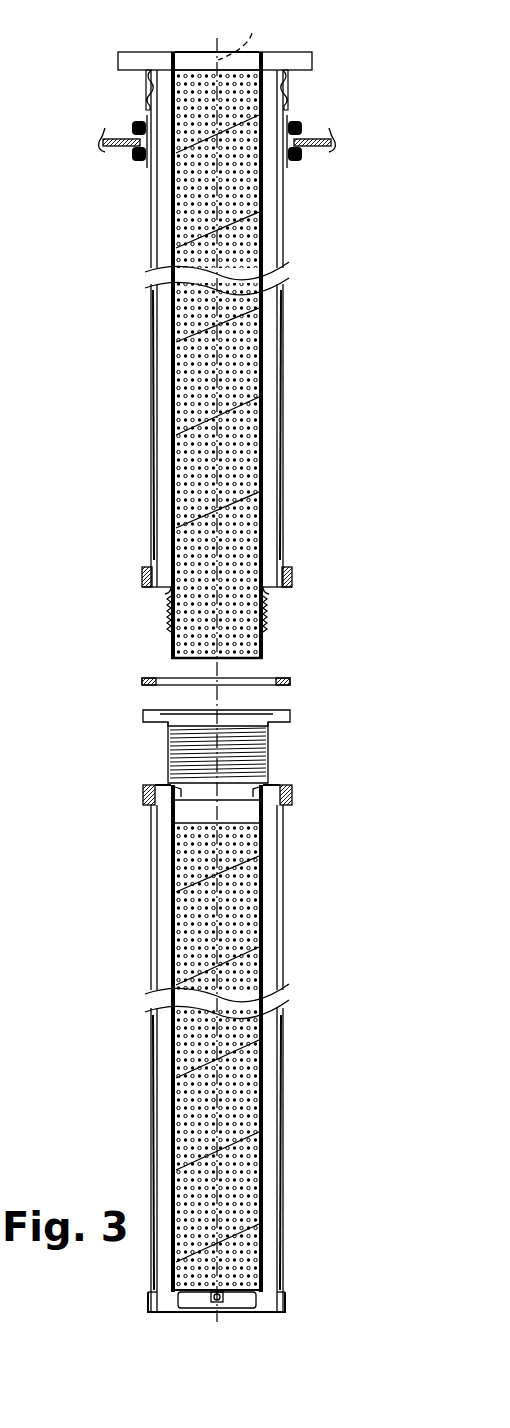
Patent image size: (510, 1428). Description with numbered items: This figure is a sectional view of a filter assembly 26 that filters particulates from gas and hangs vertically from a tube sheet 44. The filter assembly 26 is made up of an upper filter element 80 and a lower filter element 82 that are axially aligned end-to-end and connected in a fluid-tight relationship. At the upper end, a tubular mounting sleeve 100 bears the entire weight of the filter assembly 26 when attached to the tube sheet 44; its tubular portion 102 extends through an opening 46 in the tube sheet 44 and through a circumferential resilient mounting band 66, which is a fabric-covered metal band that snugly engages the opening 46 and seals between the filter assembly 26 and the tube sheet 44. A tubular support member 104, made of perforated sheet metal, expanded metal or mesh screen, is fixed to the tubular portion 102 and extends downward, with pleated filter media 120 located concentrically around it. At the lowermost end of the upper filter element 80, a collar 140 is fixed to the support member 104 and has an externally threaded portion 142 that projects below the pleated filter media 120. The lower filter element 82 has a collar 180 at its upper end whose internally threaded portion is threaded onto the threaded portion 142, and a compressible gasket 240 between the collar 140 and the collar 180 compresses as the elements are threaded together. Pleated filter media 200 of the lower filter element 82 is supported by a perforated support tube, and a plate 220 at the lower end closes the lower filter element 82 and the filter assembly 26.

The filter assembly 26 is at (226, 337).
The mounting sleeve 100 is at (303, 50).
The tubular portion 102 is at (290, 85).
The resilient mounting band 66 is at (140, 124).
The tube sheet 44 is at (300, 137).
The opening 46 is at (150, 148).
The pleated filter media 120 is at (278, 240).
The upper filter element 80 is at (287, 398).
The tubular support member 104 is at (170, 592).
The externally threaded portion 142 is at (266, 616).
The collar 140 is at (168, 620).
The compressible gasket 240 is at (285, 678).
The collar 180 is at (273, 727).
The lower filter element 82 is at (247, 1065).
The pleated filter media 200 is at (283, 1046).
The plate 220 is at (247, 1303).